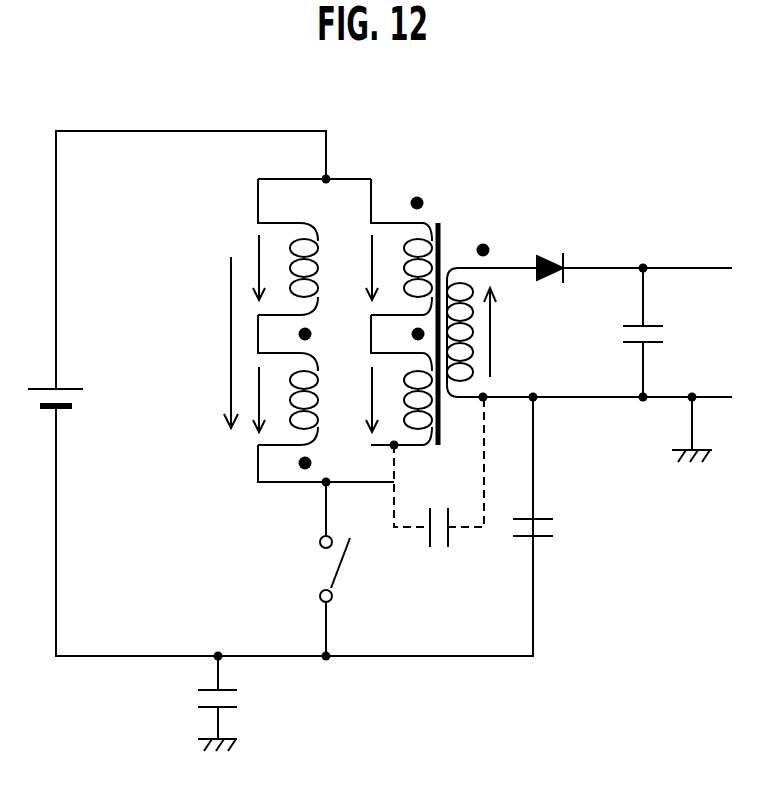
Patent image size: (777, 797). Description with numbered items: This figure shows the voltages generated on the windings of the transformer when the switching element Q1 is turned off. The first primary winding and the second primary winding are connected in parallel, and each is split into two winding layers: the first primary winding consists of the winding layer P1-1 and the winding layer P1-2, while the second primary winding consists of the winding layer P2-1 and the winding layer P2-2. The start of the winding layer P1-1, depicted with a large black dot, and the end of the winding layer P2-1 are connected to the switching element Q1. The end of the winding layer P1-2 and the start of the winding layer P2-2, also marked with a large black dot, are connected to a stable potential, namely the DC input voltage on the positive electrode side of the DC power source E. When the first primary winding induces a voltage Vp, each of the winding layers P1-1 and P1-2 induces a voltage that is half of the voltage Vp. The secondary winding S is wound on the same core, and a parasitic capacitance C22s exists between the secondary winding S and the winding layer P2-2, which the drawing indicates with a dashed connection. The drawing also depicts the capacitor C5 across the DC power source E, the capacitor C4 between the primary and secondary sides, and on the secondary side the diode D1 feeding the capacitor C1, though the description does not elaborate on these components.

The winding layer P1-1 is at (251, 257).
The winding layer P1-2 is at (265, 440).
The winding layer P2-1 is at (403, 232).
The winding layer P2-2 is at (413, 425).
The voltage Vp is at (210, 342).
The secondary winding S is at (483, 332).
The parasitic capacitance C22s is at (439, 491).
The DC power source E is at (59, 415).
The switching element Q1 is at (318, 569).
The capacitor C5 is at (237, 703).
The capacitor C4 is at (553, 530).
The output smoothing capacitor C1 is at (662, 332).
The rectifying diode D1 is at (551, 251).